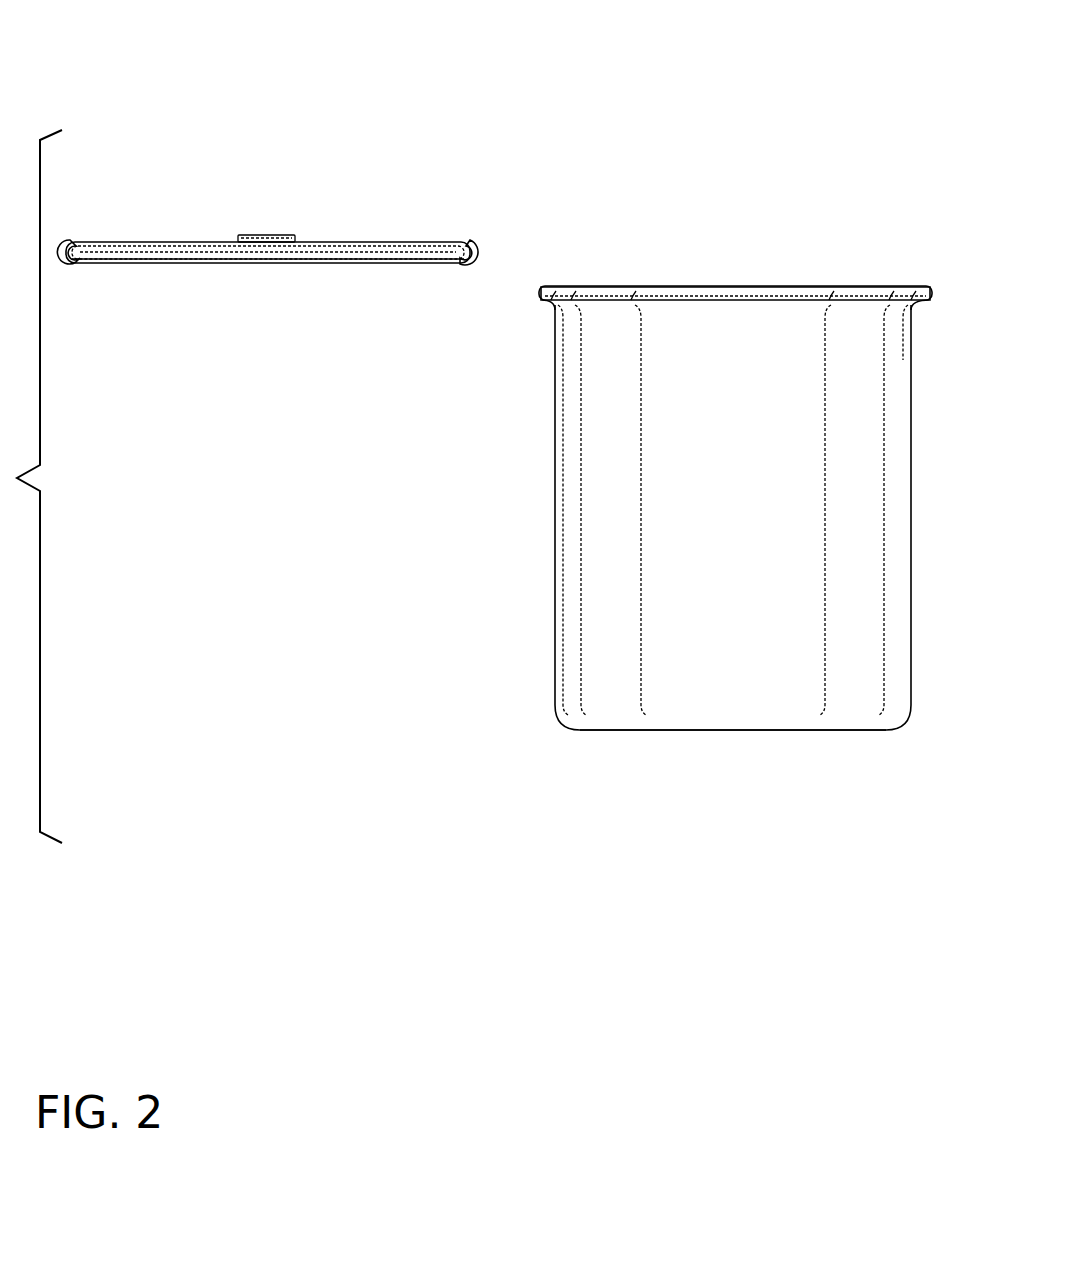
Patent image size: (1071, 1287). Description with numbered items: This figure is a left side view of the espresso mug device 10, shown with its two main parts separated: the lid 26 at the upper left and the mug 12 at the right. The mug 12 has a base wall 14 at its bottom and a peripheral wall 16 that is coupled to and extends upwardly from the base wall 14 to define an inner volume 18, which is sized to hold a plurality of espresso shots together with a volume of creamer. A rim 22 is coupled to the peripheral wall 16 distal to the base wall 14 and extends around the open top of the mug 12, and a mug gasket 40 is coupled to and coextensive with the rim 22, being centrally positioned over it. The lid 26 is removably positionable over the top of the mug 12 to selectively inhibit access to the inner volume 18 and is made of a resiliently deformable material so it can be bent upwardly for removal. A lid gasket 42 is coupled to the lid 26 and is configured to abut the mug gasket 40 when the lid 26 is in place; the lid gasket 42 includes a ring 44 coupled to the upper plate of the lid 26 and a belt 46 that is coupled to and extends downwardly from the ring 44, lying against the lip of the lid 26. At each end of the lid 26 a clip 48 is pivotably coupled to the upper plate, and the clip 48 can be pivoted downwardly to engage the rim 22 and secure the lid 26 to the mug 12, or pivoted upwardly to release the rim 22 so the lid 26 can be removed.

The espresso mug device 10 is at (662, 116).
The mug 12 is at (550, 701).
The base wall 14 is at (733, 731).
The peripheral wall 16 is at (597, 452).
The inner volume 18 is at (655, 372).
The rim 22 is at (930, 289).
The lid 26 is at (474, 245).
The mug gasket 40 is at (877, 289).
The lid gasket 42 is at (94, 268).
The ring 44 is at (80, 243).
The belt 46 is at (385, 265).
The clip 48 is at (56, 268).